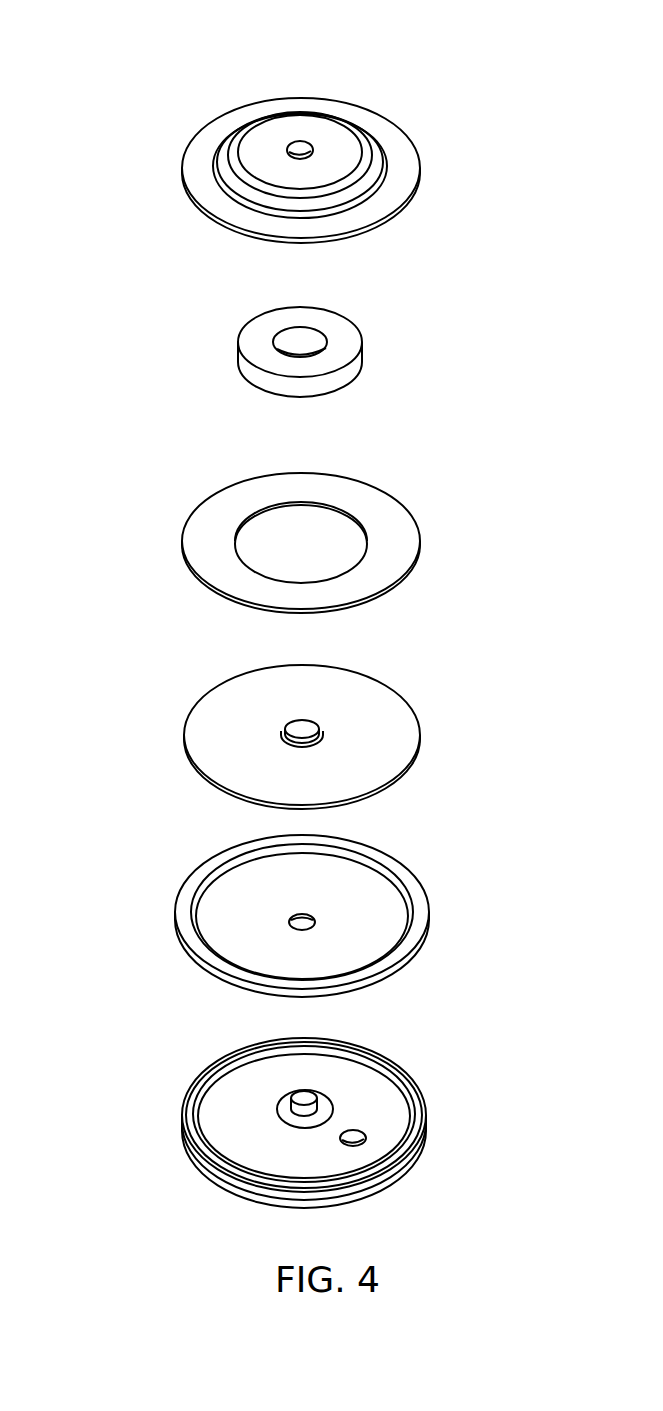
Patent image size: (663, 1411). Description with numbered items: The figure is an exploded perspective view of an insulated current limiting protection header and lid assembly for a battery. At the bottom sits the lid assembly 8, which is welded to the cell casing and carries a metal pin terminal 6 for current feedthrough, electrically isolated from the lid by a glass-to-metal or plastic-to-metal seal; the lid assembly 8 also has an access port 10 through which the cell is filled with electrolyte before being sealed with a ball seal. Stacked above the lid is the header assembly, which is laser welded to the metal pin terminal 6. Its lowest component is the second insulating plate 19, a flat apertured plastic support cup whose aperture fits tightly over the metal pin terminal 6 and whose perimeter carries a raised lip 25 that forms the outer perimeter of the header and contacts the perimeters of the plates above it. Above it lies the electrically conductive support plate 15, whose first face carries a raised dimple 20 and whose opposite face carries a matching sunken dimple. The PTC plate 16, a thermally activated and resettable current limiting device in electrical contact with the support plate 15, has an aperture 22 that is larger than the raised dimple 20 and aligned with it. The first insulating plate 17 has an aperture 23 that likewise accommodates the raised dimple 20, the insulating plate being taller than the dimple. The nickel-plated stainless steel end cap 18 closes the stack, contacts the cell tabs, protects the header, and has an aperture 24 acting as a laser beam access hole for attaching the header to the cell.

The metal pin terminal 6 is at (290, 1107).
The lid assembly 8 is at (425, 1105).
The access port 10 is at (355, 1143).
The support plate 15 is at (420, 735).
The PTC plate 16 is at (420, 534).
The first insulating plate 17 is at (362, 350).
The end cap 18 is at (418, 173).
The second insulating plate 19 is at (430, 895).
The raised dimple 20 is at (282, 732).
The aperture 22 is at (288, 548).
The aperture 23 is at (294, 350).
The aperture 24 is at (287, 149).
The raised lip 25 is at (183, 925).